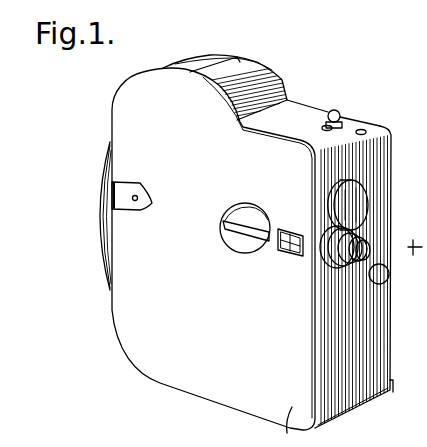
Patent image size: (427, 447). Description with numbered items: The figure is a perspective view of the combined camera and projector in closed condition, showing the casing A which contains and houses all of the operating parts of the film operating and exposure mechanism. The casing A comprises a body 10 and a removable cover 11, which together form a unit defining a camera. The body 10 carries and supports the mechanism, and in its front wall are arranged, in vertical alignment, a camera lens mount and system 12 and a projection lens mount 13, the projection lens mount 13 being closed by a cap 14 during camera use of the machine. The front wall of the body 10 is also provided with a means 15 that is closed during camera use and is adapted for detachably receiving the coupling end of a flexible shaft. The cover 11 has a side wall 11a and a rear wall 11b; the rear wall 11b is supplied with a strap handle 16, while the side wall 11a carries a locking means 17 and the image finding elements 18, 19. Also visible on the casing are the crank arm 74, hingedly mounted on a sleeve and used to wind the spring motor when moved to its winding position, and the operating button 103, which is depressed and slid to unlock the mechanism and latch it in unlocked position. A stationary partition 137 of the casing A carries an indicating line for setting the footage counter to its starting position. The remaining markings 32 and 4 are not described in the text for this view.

The body 10 is at (246, 249).
The removable cover 11 is at (120, 303).
The side wall 11a is at (301, 427).
The rear wall 11b is at (187, 65).
The camera lens mount and system 12 is at (363, 237).
The projection lens mount 13 is at (328, 192).
The cap 14 is at (340, 210).
The means for receiving flexible shaft coupling 15 is at (383, 272).
The strap handle 16 is at (103, 195).
The locking means 17 is at (240, 227).
The image finding element 18 is at (128, 190).
The image finding element 19 is at (288, 226).
The setting dial 32 is at (234, 230).
The crank arm 74 is at (394, 388).
The operating button 103 is at (336, 112).
The stationary partition 137 is at (415, 296).
The casing A is at (273, 123).
The viewing direction arrow 4 is at (415, 237).